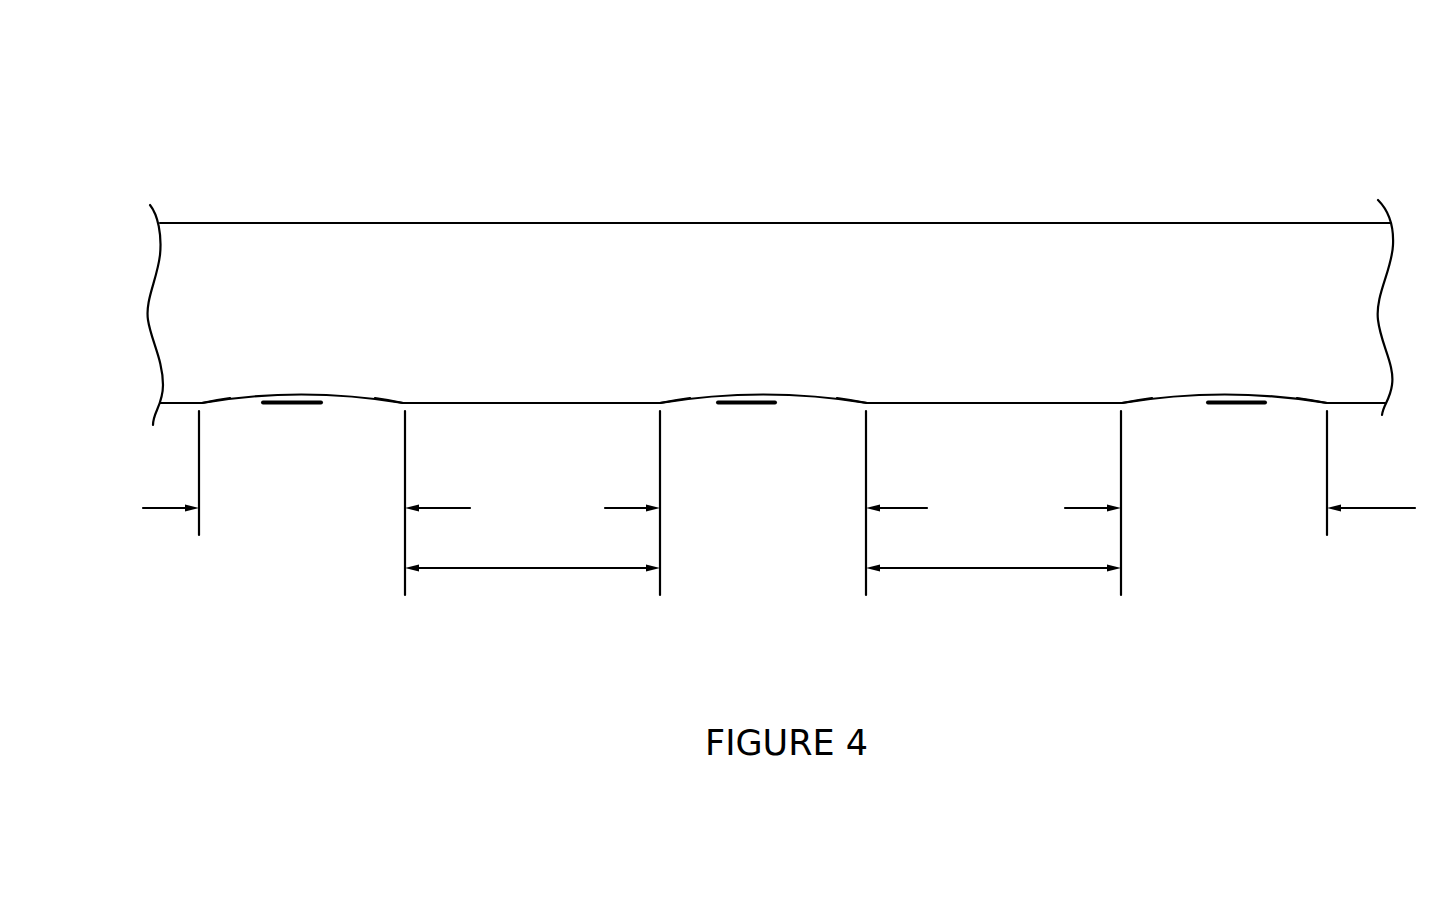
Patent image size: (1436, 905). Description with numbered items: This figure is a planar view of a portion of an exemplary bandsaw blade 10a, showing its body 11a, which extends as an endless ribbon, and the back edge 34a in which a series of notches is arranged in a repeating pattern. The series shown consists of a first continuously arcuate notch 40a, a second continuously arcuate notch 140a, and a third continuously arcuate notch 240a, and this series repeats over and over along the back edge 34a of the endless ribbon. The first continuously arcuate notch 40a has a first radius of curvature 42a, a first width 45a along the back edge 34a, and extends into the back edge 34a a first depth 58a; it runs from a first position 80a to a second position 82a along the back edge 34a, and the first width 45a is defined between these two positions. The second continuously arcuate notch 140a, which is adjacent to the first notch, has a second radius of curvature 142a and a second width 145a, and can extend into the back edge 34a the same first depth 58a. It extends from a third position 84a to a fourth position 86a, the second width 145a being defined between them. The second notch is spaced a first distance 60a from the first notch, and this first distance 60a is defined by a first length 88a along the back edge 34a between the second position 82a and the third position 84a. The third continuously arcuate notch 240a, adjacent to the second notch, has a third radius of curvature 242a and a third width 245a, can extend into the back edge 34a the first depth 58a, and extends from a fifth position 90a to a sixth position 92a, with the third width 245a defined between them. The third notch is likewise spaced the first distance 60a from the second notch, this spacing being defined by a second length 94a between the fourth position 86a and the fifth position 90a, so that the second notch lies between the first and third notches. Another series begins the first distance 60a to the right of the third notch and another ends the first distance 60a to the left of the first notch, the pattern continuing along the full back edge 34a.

The blade 10a is at (764, 107).
The body 11a is at (1040, 313).
The back edge 34a is at (176, 405).
The first length 88a is at (560, 403).
The second length 94a is at (1013, 403).
The first continuously arcuate notch 40a is at (320, 535).
The first radius of curvature 42a is at (307, 386).
The first depth 58a is at (291, 455).
The first position 80a is at (203, 406).
The second position 82a is at (400, 402).
The first width 45a is at (470, 508).
The first distance 60a is at (563, 570).
The second continuously arcuate notch 140a is at (793, 540).
The second radius of curvature 142a is at (763, 386).
The third position 84a is at (665, 403).
The fourth position 86a is at (863, 403).
The second width 145a is at (927, 508).
The third continuously arcuate notch 240a is at (1218, 553).
The third radius of curvature 242a is at (1205, 386).
The fifth position 90a is at (1125, 403).
The sixth position 92a is at (1323, 403).
The third width 245a is at (1395, 508).